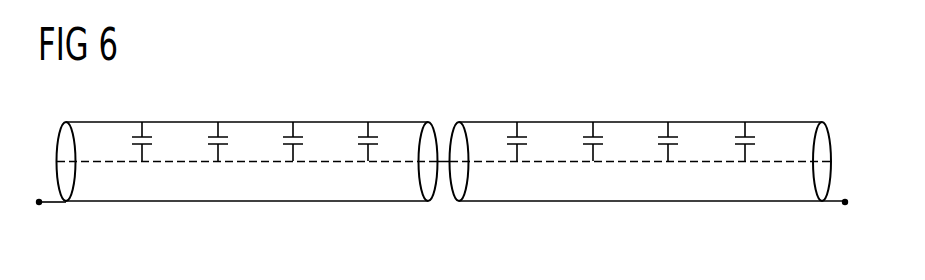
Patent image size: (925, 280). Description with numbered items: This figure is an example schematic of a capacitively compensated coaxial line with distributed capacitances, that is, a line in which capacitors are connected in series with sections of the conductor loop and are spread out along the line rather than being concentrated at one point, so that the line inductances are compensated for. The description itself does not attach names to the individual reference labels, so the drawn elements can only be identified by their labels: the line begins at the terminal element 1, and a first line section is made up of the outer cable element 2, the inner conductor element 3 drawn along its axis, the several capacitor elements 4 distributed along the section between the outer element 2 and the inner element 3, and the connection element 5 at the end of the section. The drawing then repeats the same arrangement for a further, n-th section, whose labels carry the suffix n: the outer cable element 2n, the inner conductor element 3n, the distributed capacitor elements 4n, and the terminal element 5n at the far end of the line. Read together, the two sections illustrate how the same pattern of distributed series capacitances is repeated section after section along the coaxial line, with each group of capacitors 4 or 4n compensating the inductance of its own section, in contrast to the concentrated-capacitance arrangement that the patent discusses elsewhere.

The first connection terminal 1 is at (40, 206).
The cable segment (outer conductor / shield) 2 is at (107, 203).
The inner conductor of cable segment 3 is at (161, 164).
The capacitor 4 is at (291, 135).
The connection between cable segments 5 is at (442, 163).
The n-th cable segment 2n is at (485, 203).
The inner conductor of n-th cable segment 3n is at (540, 164).
The capacitor of n-th cable segment 4n is at (666, 134).
The end connection terminal 5n is at (844, 206).